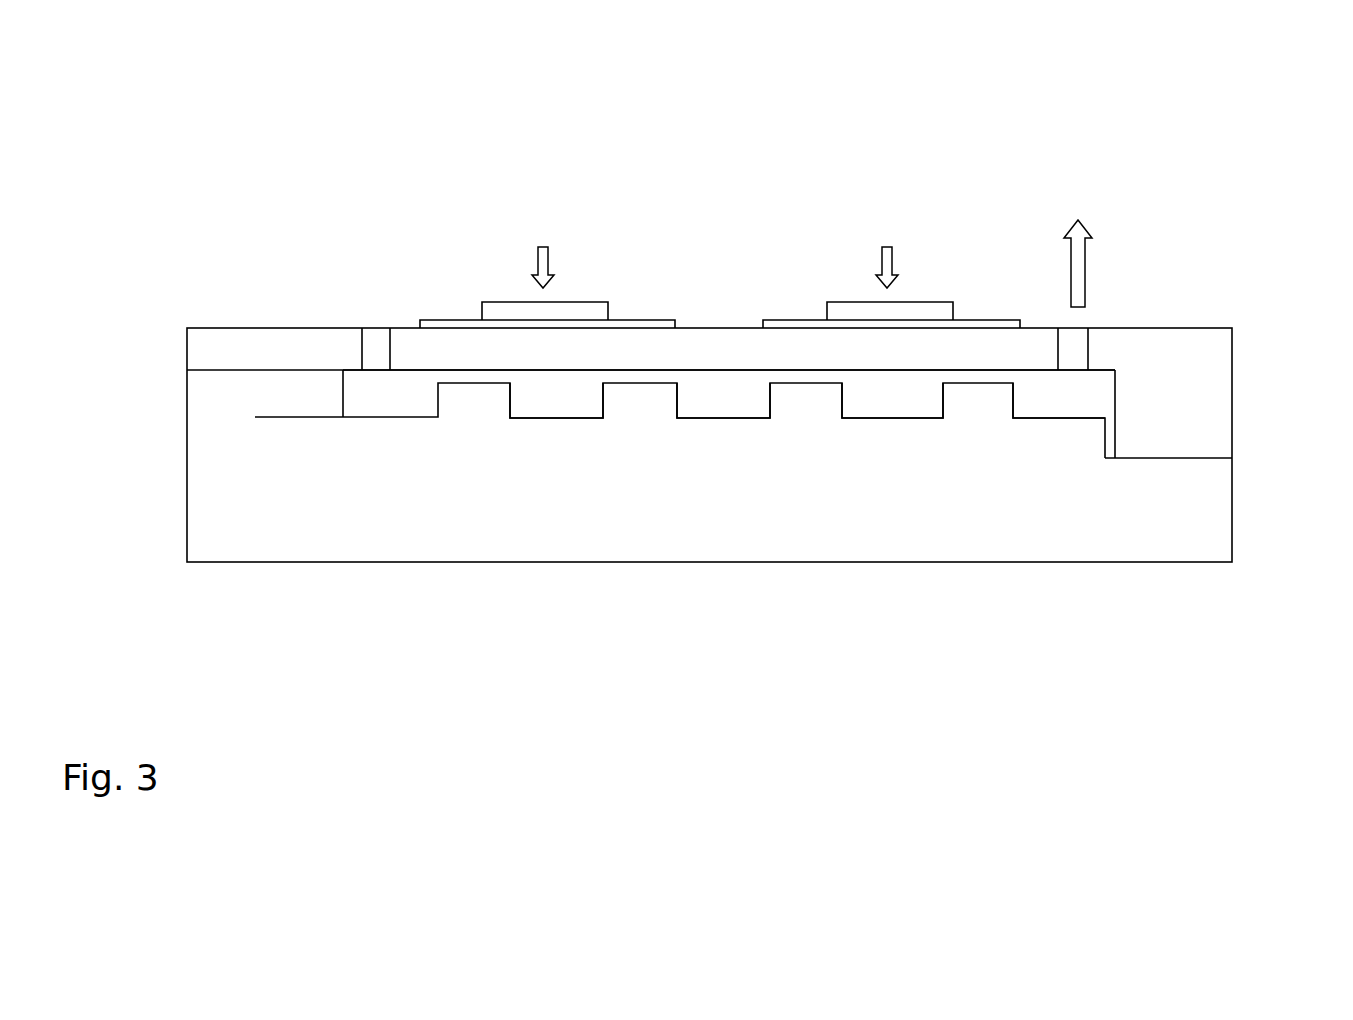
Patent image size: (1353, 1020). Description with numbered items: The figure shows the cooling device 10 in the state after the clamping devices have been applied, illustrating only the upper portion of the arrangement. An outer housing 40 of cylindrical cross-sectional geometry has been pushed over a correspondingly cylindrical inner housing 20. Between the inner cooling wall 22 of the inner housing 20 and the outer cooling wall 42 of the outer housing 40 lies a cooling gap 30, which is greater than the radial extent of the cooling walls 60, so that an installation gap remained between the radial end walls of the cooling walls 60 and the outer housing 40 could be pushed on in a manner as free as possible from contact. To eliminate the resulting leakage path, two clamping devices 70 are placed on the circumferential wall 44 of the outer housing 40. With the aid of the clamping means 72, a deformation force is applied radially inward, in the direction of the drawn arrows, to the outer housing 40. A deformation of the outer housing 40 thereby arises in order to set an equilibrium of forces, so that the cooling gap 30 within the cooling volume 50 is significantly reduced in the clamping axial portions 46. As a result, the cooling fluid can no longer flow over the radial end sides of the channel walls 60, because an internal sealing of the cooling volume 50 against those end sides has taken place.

The cooling device 10 is at (325, 160).
The inner housing 20 is at (1200, 537).
The inner cooling wall 22 is at (1043, 418).
The cooling gap 30 is at (266, 370).
The outer housing 40 is at (1200, 417).
The outer cooling wall 42 is at (569, 370).
The circumferential wall 44 is at (749, 329).
The clamping axial portions 46 is at (636, 228).
The cooling volume 50 is at (356, 390).
The cooling walls 60 is at (785, 400).
The clamping device 70 is at (578, 250).
The clamping means 72 is at (498, 310).